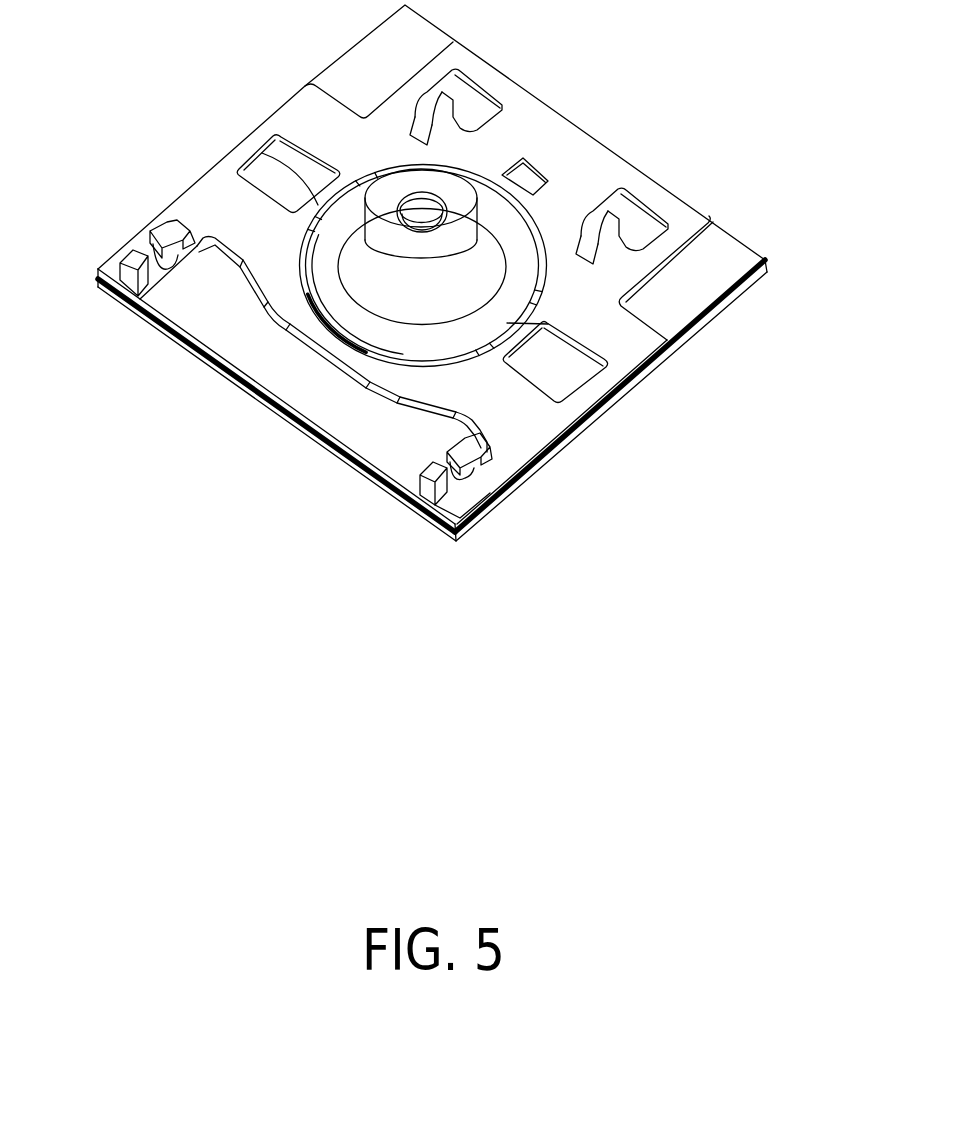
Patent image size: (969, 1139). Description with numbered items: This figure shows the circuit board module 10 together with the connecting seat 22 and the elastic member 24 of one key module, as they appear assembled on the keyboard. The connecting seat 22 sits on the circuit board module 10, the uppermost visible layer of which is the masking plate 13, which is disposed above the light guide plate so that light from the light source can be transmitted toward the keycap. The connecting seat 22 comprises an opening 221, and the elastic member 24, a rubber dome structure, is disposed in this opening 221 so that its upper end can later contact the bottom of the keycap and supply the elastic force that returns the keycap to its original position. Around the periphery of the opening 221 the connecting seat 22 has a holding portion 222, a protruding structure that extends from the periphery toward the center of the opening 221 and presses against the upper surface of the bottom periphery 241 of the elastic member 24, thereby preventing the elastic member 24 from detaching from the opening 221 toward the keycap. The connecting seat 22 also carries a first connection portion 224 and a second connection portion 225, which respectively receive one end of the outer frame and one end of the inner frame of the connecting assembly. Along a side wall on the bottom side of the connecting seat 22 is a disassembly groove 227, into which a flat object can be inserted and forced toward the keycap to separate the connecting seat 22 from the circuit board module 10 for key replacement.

The circuit board module 10 is at (219, 372).
The masking plate 13 is at (176, 308).
The connecting seat 22 is at (287, 115).
The opening 221 is at (283, 152).
The holding portion 222 is at (313, 248).
The first connection portion 224 is at (150, 257).
The second connection portion 225 is at (450, 90).
The disassembly groove 227 is at (328, 355).
The elastic member 24 is at (394, 190).
The bottom periphery 241 is at (608, 366).